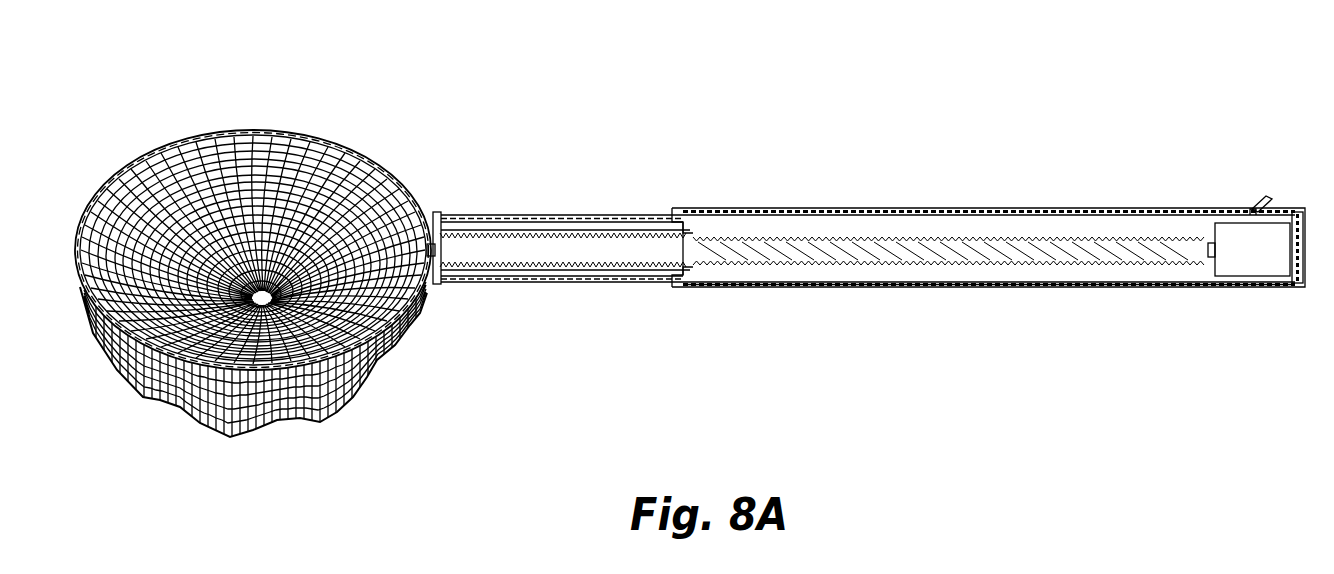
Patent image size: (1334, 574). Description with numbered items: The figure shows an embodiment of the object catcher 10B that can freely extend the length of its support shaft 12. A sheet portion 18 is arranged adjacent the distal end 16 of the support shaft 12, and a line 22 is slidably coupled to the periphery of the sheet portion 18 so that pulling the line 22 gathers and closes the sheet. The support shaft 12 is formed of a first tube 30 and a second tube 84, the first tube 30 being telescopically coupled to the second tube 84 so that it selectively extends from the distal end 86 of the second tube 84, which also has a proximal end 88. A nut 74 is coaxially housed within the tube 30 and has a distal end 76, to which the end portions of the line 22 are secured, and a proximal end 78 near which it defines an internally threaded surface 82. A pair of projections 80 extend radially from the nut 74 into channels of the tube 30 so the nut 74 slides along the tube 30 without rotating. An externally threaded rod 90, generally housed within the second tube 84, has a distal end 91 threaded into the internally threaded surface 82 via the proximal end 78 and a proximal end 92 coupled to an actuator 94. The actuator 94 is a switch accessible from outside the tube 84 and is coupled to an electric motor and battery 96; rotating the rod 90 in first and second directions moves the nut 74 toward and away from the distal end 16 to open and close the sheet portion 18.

The object catcher 10B is at (1150, 92).
The support shaft 12 is at (517, 130).
The distal end 16 is at (433, 275).
The sheet portion 18 is at (175, 405).
The line 22 is at (347, 148).
The tube 30 is at (487, 215).
The nut 74 is at (533, 230).
The distal end 76 is at (434, 214).
The proximal end 78 is at (713, 233).
The projections 80 is at (443, 220).
The internally threaded surface 82 is at (583, 234).
The second tube 84 is at (1090, 208).
The distal end 86 is at (787, 210).
The proximal end 88 is at (1290, 208).
The externally threaded rod 90 is at (960, 252).
The distal end 91 is at (653, 263).
The proximal end 92 is at (1210, 262).
The actuator 94 is at (1263, 197).
The electric motor and battery 96 is at (1270, 278).